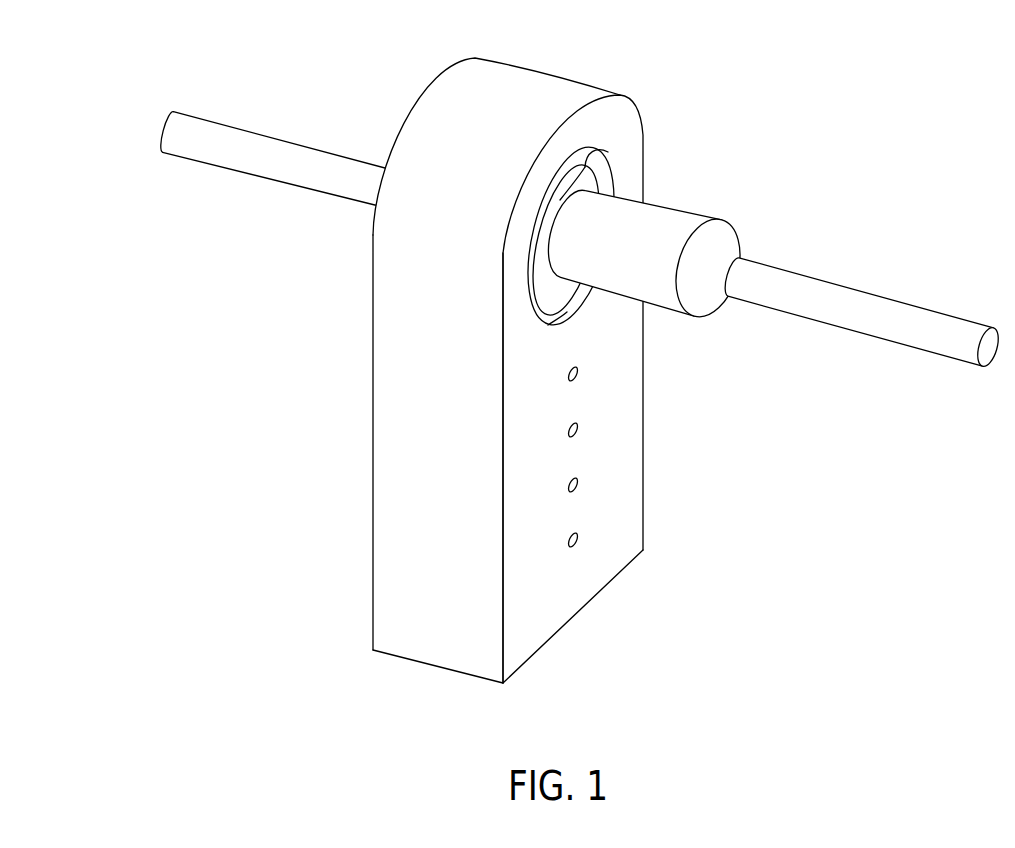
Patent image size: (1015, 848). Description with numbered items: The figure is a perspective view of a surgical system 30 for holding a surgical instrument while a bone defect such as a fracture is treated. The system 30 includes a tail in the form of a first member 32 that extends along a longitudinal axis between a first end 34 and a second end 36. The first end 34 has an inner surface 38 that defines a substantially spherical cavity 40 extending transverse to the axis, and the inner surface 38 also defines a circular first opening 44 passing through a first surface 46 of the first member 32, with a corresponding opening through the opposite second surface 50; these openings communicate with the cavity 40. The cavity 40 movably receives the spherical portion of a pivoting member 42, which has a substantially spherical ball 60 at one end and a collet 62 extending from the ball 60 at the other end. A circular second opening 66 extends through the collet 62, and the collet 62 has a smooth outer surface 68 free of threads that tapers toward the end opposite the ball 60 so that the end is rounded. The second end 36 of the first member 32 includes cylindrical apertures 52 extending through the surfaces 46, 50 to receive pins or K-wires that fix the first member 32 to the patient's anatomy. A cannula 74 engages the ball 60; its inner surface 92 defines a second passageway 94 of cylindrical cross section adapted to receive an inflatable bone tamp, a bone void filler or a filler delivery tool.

The surgical system 30 is at (878, 501).
The first member 32 is at (474, 376).
The first end 34 is at (447, 88).
The second end 36 is at (433, 637).
The inner surface 38 is at (613, 150).
The substantially spherical cavity 40 is at (567, 312).
The pivoting member 42 is at (775, 249).
The circular first opening 44 is at (631, 155).
The first surface 46 is at (630, 465).
The second surface 50 is at (373, 499).
The cylindrical aperture 52 is at (578, 373).
The substantially spherical ball 60 is at (614, 203).
The collet 62 is at (715, 232).
The circular second opening 66 is at (753, 248).
The outer surface 68 is at (670, 300).
The cannula 74 is at (231, 178).
The inner surface 92 is at (231, 124).
The second passageway 94 is at (145, 106).